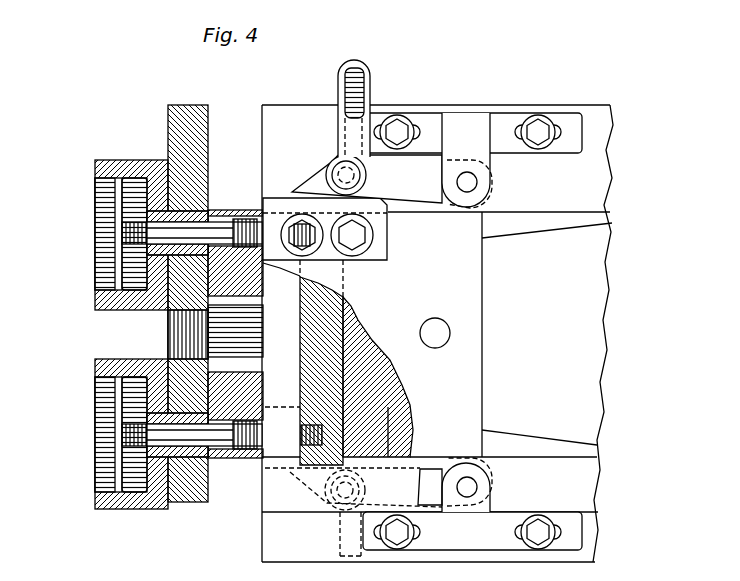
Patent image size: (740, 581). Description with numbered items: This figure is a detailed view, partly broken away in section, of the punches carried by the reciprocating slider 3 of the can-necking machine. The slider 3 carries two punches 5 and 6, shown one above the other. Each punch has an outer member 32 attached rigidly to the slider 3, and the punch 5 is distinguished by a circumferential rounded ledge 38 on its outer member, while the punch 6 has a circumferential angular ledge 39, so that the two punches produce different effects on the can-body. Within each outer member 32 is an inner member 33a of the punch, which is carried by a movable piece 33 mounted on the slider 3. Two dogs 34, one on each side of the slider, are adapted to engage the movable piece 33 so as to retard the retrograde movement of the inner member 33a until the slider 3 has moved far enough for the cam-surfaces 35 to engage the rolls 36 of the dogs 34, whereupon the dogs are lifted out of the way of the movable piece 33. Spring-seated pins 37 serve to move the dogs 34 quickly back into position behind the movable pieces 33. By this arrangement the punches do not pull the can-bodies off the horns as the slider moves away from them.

The reciprocating slider 3 is at (588, 268).
The punch 5 is at (117, 178).
The punch 6 is at (123, 510).
The outer member of the punch 32 is at (97, 163).
The movable piece 33 is at (313, 347).
The inner member of the punch 33a is at (128, 218).
The dogs 34 is at (424, 196).
The cam-surfaces 35 is at (323, 208).
The rolls 36 is at (348, 172).
The spring-seated pins 37 is at (358, 76).
The circumferential rounded ledge 38 is at (116, 176).
The circumferential angular ledge 39 is at (118, 378).